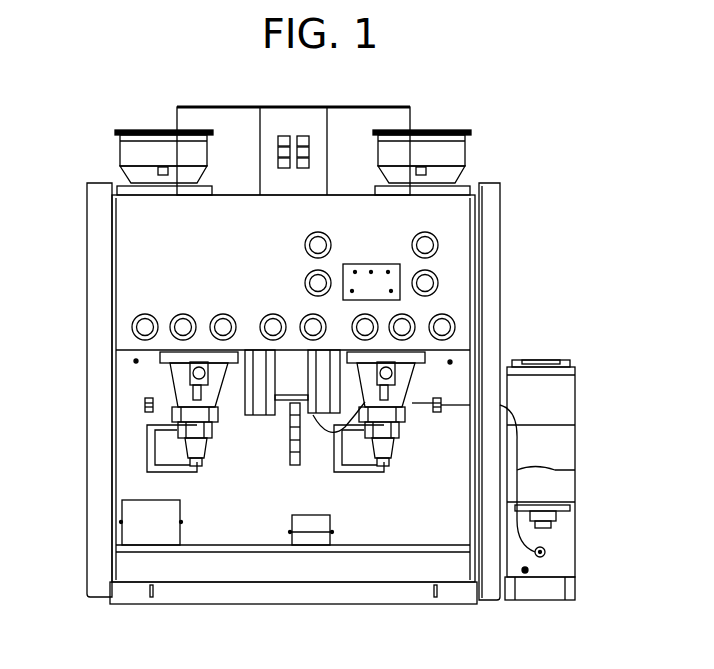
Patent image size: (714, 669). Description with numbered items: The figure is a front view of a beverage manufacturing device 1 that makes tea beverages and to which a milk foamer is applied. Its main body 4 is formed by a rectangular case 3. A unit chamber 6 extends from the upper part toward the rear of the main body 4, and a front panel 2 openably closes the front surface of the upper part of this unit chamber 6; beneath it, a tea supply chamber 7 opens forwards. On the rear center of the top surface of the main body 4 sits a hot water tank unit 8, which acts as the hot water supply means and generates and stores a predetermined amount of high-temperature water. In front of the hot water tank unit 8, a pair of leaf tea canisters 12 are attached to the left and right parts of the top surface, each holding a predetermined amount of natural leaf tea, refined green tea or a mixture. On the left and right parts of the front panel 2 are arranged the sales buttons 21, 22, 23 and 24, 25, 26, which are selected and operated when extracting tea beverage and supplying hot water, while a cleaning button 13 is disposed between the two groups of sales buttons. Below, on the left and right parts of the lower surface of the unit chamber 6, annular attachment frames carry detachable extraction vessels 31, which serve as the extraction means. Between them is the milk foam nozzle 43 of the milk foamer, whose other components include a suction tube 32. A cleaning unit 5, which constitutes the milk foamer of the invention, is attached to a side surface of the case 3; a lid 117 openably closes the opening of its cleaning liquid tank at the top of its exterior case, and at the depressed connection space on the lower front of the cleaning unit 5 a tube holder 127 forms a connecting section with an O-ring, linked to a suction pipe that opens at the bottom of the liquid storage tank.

The beverage manufacturing device 1 is at (541, 184).
The front panel 2 is at (147, 237).
The rectangular case 3 is at (90, 187).
The main body 4 is at (88, 265).
The cleaning unit 5 is at (576, 423).
The unit chamber 6 is at (488, 263).
The tea supply chamber 7 is at (133, 487).
The hot water tank unit 8 is at (360, 107).
The leaf tea canister 12 is at (130, 137).
The cleaning button 13 is at (308, 318).
The sales button 21 is at (132, 327).
The sales button 22 is at (183, 313).
The sales button 23 is at (222, 314).
The sales button 24 is at (370, 314).
The sales button 25 is at (410, 337).
The sales button 26 is at (456, 322).
The extraction vessel 31 is at (172, 393).
The suction tube 32 is at (575, 470).
The milk foam nozzle 43 is at (289, 446).
The lid 117 is at (572, 364).
The tube holder 127 is at (545, 552).